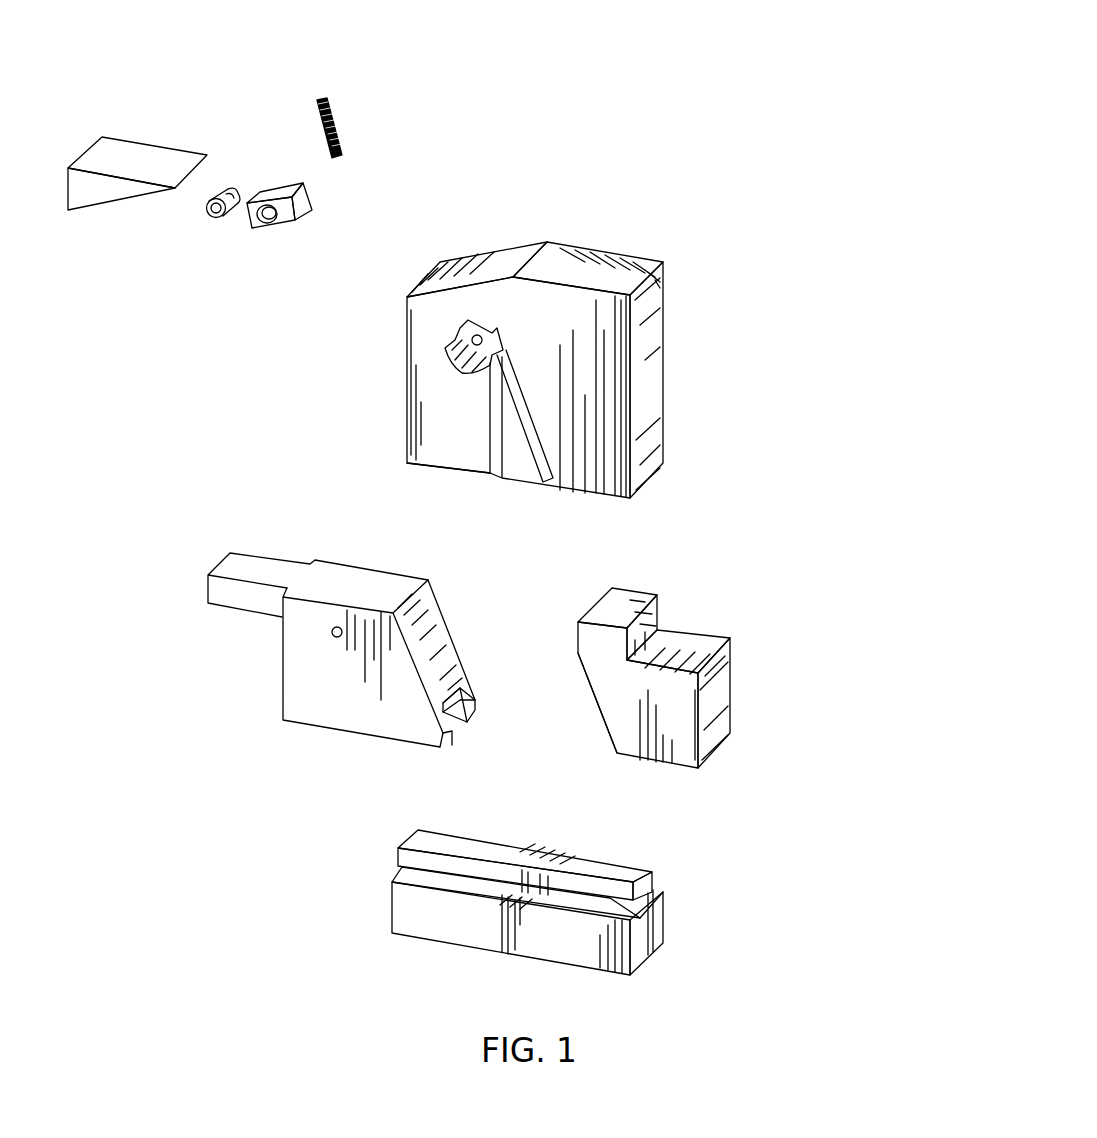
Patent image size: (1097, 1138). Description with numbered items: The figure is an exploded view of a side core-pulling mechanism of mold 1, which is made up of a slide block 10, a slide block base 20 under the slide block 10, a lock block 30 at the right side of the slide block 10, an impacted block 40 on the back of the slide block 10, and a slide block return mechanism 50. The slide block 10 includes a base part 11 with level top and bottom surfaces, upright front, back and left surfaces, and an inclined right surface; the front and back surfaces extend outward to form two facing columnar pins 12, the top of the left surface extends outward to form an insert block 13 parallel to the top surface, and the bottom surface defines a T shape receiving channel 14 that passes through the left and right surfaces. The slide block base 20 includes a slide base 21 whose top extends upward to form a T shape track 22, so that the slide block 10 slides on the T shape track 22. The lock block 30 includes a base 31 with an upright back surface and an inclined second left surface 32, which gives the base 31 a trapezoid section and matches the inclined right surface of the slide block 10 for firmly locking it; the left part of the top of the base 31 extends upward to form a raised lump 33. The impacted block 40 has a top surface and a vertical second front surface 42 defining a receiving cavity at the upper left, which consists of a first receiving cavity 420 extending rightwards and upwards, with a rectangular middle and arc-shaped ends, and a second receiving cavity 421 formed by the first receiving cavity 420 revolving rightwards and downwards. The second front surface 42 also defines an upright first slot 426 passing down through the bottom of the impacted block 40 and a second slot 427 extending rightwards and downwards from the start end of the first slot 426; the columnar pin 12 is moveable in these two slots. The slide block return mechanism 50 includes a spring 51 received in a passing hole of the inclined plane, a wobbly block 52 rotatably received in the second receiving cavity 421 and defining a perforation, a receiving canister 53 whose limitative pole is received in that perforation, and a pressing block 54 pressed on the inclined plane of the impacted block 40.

The side core-pulling mechanism of mold 1 is at (897, 43).
The slide block 10 is at (192, 553).
The base part 11 is at (290, 675).
The columnar pin 12 is at (330, 636).
The insert block 13 is at (273, 565).
The receiving channel 14 is at (465, 722).
The slide block base 20 is at (378, 937).
The slide base 21 is at (655, 873).
The T shape track 22 is at (645, 962).
The lock block 30 is at (726, 760).
The base 31 is at (610, 695).
The second left surface 32 is at (588, 690).
The raised lump 33 is at (623, 600).
The impacted block 40 is at (672, 249).
The second front surface 42 is at (440, 433).
The first receiving cavity 420 is at (443, 347).
The second receiving cavity 421 is at (496, 325).
The first slot 426 is at (497, 470).
The second slot 427 is at (547, 483).
The slide block return mechanism 50 is at (277, 63).
The spring 51 is at (333, 128).
The wobbly block 52 is at (287, 218).
The receiving canister 53 is at (213, 215).
The pressing block 54 is at (87, 195).